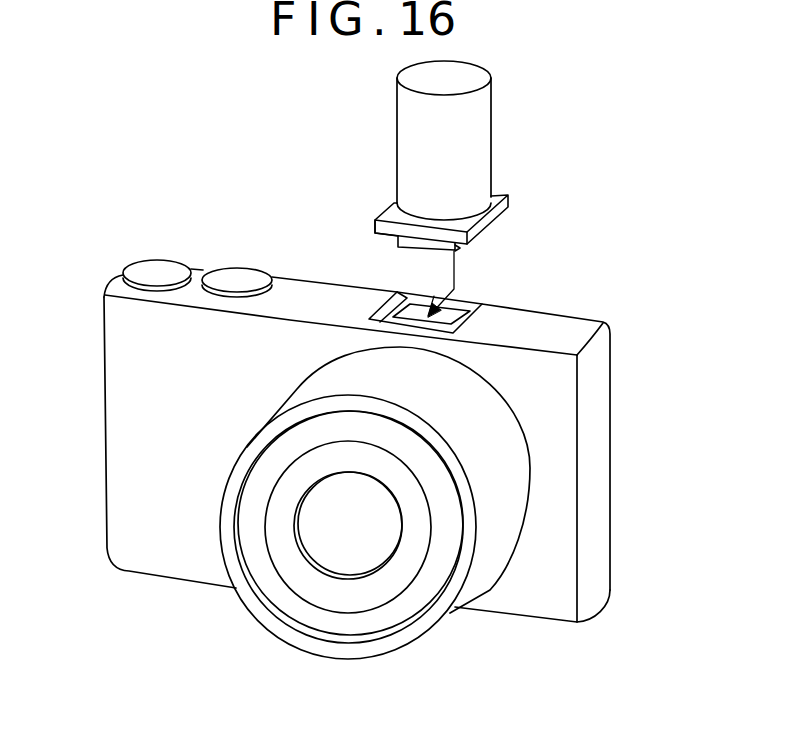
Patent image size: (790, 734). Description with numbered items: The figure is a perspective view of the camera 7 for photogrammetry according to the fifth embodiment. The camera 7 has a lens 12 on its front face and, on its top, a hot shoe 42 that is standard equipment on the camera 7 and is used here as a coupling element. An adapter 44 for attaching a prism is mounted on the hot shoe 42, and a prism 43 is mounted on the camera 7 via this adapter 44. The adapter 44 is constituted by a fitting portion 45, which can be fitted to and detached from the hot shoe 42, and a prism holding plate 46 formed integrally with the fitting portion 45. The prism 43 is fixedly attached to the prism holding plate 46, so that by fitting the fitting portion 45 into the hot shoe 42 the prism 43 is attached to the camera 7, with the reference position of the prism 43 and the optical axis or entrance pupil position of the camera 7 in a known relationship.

The camera 7 is at (563, 312).
The lens barrel 12 is at (486, 589).
The hot shoe 42 is at (478, 305).
The prism 43 is at (491, 122).
The adapter for attaching the prism 44 is at (502, 218).
The fitting portion 45 is at (398, 246).
The prism holding plate 46 is at (375, 221).